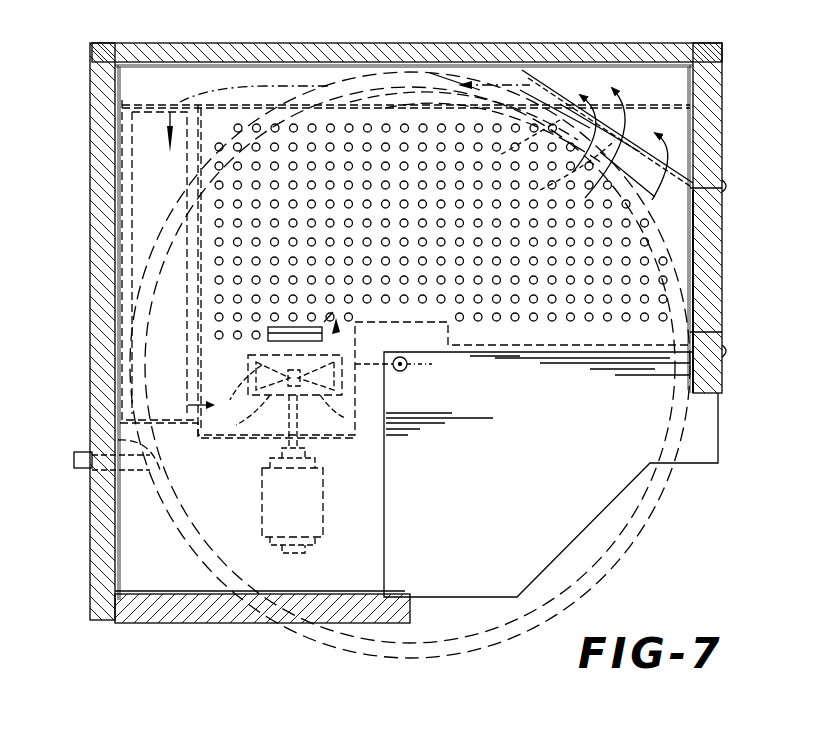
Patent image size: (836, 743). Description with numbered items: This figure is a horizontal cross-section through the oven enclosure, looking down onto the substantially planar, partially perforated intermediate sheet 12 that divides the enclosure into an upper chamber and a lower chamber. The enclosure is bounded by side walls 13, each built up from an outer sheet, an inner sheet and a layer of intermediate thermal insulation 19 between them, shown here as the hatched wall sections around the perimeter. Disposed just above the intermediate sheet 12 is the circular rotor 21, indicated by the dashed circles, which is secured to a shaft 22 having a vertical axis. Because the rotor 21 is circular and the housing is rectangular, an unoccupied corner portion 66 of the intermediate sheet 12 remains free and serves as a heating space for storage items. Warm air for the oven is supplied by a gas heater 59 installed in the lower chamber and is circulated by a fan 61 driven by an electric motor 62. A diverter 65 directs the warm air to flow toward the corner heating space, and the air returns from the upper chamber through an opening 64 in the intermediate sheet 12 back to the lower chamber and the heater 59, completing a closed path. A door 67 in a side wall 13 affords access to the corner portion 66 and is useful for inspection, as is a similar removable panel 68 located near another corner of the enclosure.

The intermediate sheet 12 is at (512, 492).
The side walls 13 is at (290, 42).
The thermal insulation 19 is at (360, 42).
The rotor 21 is at (432, 650).
The shaft 22 is at (405, 370).
The gas heater 59 is at (118, 232).
The fan 61 is at (312, 398).
The electric motor 62 is at (324, 522).
The opening 64 is at (666, 112).
The diverter 65 is at (268, 337).
The corner portion 66 is at (218, 514).
The door 67 is at (236, 625).
The removable panel 68 is at (720, 290).